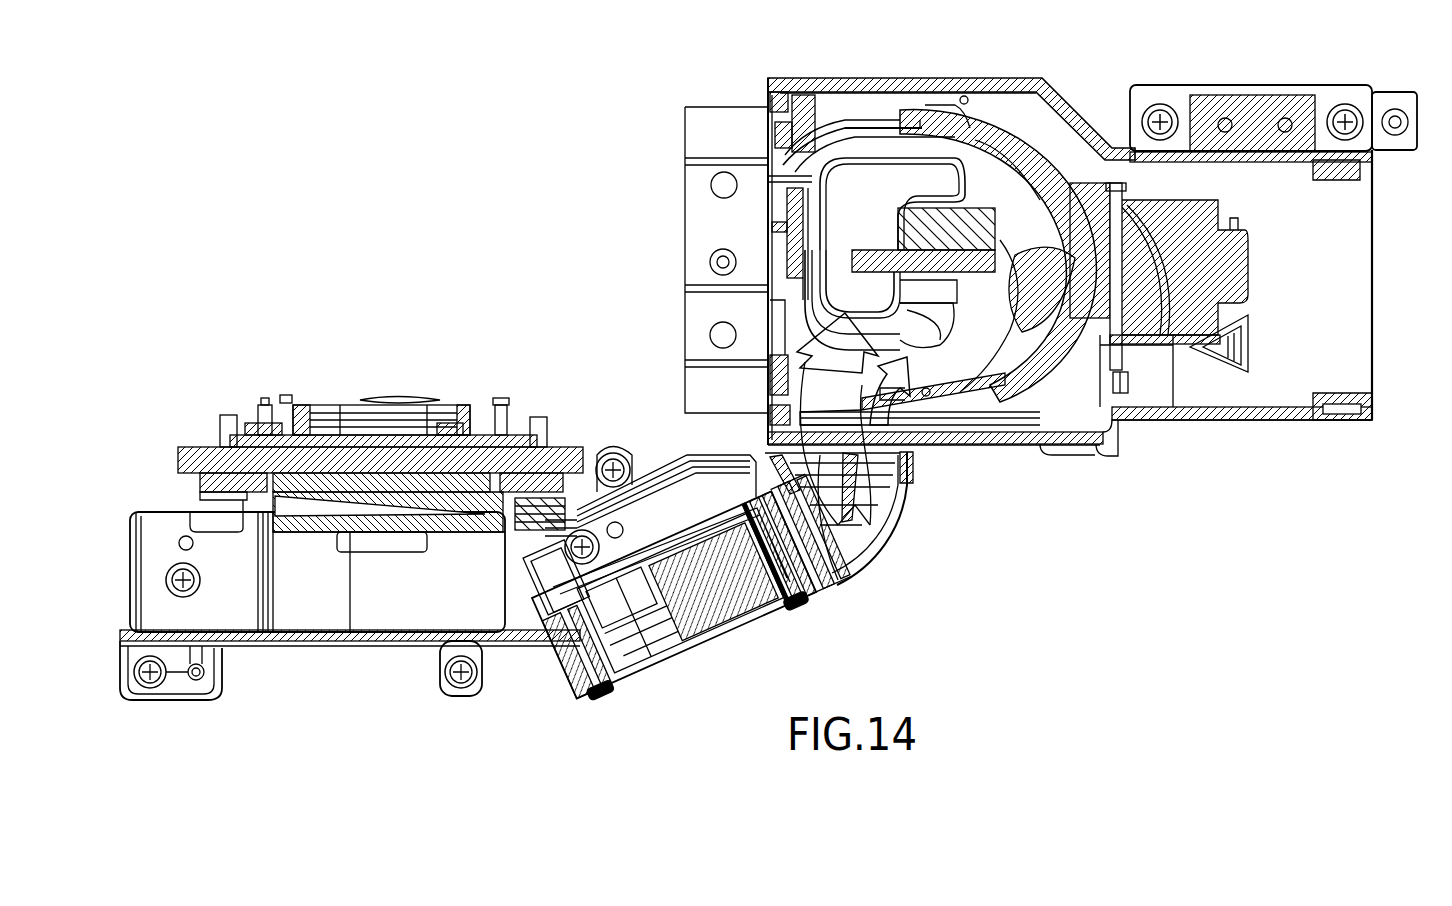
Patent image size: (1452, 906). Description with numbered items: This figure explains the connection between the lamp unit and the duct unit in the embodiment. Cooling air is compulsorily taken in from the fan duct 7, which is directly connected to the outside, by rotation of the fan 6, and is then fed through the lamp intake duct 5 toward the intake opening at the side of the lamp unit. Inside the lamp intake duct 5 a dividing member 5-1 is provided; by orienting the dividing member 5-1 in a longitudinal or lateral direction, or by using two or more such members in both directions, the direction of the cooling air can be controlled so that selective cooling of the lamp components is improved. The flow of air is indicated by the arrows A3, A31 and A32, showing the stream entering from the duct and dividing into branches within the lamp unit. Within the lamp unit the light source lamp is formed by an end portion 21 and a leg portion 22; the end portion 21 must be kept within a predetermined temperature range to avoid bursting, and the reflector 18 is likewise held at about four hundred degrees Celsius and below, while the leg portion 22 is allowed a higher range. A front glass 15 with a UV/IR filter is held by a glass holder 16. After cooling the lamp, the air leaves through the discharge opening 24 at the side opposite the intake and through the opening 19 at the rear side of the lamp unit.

The lamp intake duct 5 is at (870, 535).
The dividing member 5-1 is at (905, 470).
The fan 6 is at (668, 655).
The fan duct 7 is at (387, 613).
The front glass 15 is at (785, 310).
The glass holder 16 is at (768, 150).
The reflector 18 is at (1005, 405).
The opening 19 is at (1373, 268).
The end portion 21 is at (878, 251).
The leg portion 22 is at (1040, 285).
The opening 24 is at (850, 134).
The air flow A3 is at (849, 530).
The air flow branch A31 is at (837, 419).
The air flow branch A32 is at (915, 391).